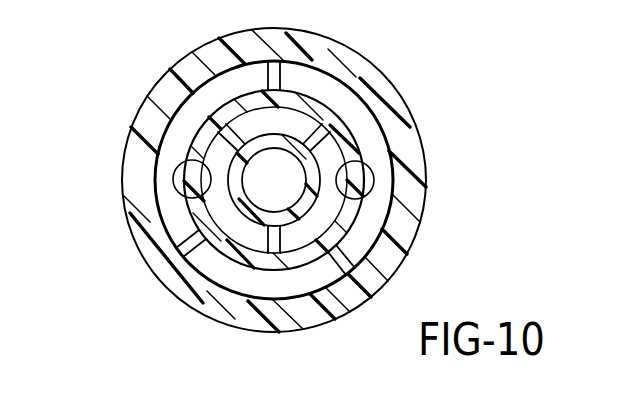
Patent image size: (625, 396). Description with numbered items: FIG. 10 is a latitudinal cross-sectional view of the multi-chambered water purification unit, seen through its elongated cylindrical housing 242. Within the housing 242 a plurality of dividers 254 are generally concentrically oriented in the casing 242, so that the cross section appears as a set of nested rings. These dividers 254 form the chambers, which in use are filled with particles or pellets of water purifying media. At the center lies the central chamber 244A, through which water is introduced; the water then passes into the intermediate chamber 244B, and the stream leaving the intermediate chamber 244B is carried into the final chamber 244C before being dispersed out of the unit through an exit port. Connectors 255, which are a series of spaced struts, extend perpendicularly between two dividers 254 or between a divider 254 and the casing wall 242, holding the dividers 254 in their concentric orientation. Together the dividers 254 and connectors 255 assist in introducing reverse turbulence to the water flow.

The housing 242 is at (413, 116).
The central chamber 244A is at (278, 192).
The intermediate chamber 244B is at (217, 211).
The final chamber 244C is at (251, 283).
The divider 254 is at (312, 98).
The connector 255 is at (343, 256).